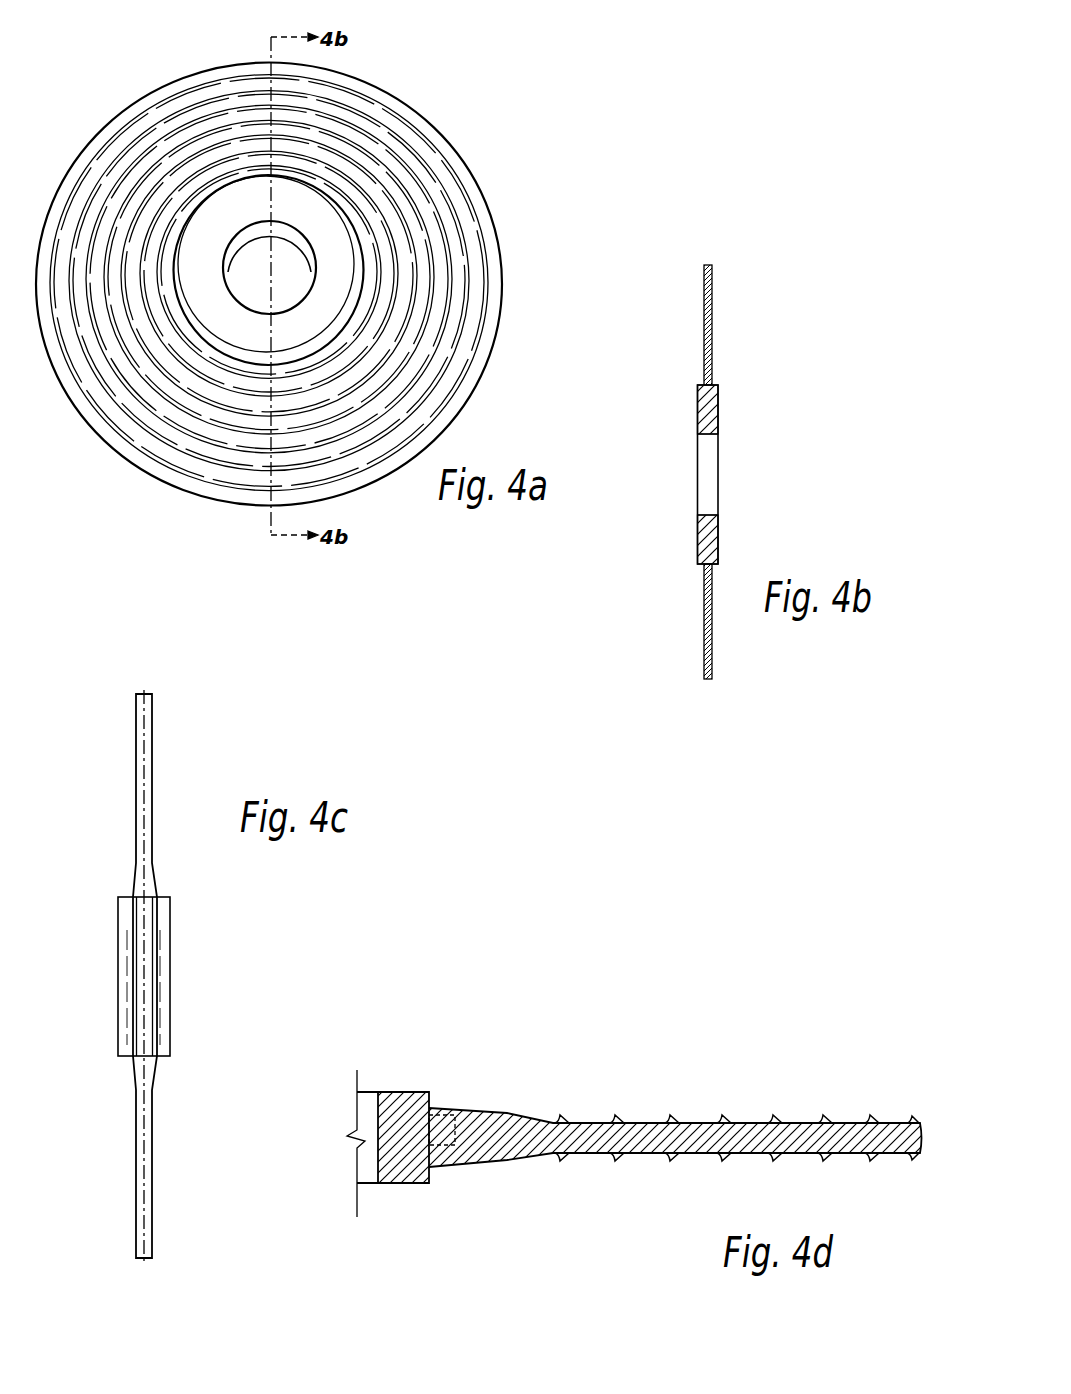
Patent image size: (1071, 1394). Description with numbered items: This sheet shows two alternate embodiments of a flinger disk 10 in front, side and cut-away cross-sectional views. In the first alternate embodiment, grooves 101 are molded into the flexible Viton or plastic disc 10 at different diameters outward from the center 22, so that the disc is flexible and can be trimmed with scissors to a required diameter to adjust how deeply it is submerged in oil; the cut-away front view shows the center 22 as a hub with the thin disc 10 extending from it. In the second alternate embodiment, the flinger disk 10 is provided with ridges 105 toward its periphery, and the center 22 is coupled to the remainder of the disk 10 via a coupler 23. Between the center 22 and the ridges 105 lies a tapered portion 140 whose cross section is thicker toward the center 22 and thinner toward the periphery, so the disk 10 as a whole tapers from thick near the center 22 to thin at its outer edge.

In FIG. 4A, the flinger disk 10 is at (285, 258).
In FIG. 4B, the flinger disk 10 is at (764, 427).
In FIG. 4C, the flinger disk 10 is at (188, 968).
In FIG. 4D, the flinger disk 10 is at (635, 1114).
In FIG. 4A, the center 22 is at (258, 252).
In FIG. 4B, the center 22 is at (712, 475).
In FIG. 4C, the center 22 is at (172, 961).
In FIG. 4D, the center 22 is at (369, 1100).
In FIG. 4D, the coupler 23 is at (437, 1147).
In FIG. 4A, the grooves 101 is at (377, 185).
In FIG. 4B, the grooves 101 is at (711, 312).
In FIG. 4D, the ridges 105 is at (823, 1120).
In FIG. 4D, the tapered portion 140 is at (473, 1108).